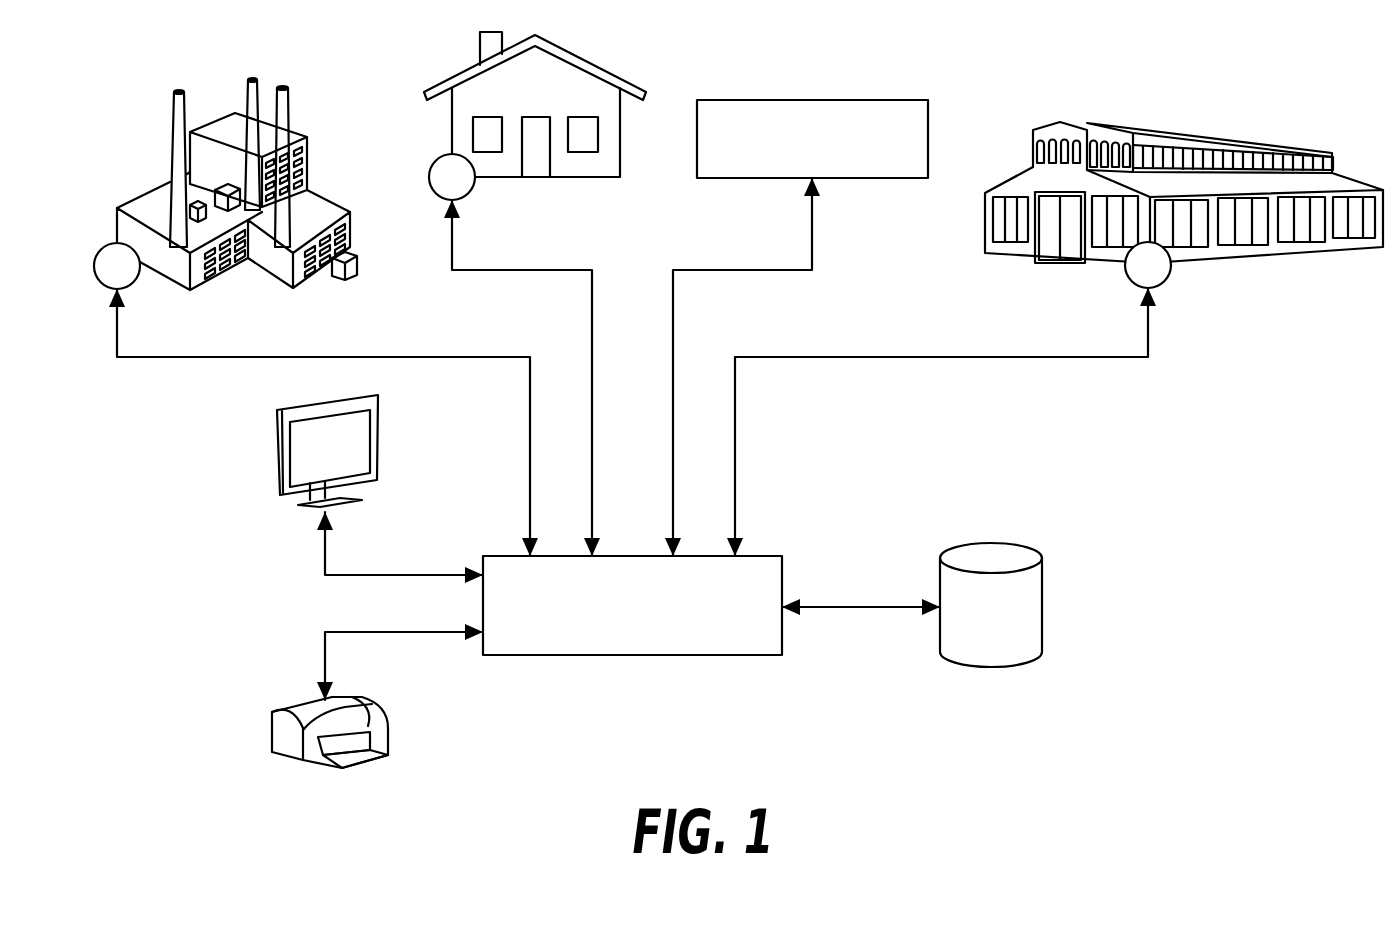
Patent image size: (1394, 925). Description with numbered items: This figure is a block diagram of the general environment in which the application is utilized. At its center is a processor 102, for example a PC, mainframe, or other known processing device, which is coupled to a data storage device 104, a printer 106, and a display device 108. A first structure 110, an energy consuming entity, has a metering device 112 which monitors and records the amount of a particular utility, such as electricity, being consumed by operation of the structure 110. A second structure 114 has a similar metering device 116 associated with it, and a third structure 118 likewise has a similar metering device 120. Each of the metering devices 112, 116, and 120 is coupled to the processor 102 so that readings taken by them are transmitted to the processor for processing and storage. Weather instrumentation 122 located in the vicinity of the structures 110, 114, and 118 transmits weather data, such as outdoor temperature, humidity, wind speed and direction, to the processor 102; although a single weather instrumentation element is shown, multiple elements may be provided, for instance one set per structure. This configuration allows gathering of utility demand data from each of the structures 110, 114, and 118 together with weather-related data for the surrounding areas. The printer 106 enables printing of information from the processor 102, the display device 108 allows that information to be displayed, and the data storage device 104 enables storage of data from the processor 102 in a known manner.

The processor 102 is at (632, 657).
The data storage device 104 is at (1043, 606).
The printer 106 is at (270, 728).
The display device 108 is at (277, 452).
The first structure 110 is at (1220, 133).
The metering device 112 is at (1168, 283).
The second structure 114 is at (591, 62).
The metering device 116 is at (427, 177).
The third structure 118 is at (141, 195).
The metering device 120 is at (93, 266).
The weather instrumentation 122 is at (812, 98).